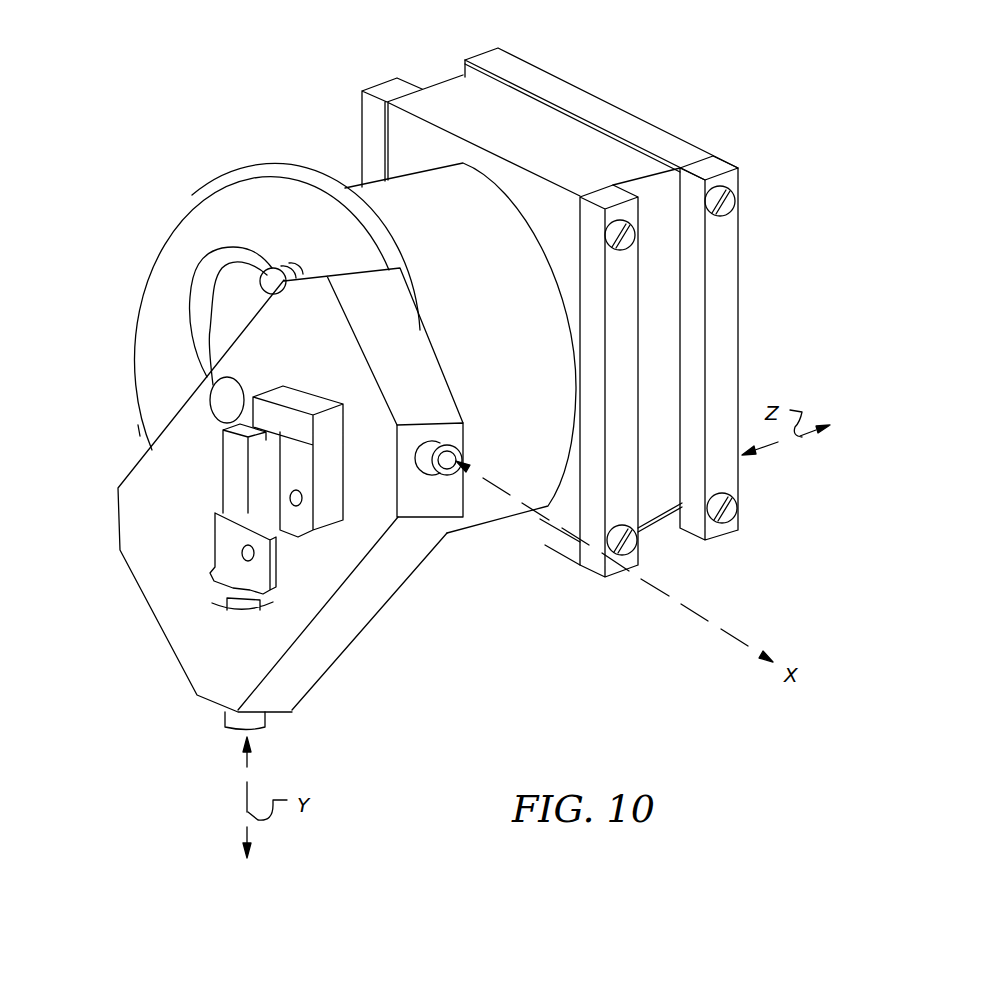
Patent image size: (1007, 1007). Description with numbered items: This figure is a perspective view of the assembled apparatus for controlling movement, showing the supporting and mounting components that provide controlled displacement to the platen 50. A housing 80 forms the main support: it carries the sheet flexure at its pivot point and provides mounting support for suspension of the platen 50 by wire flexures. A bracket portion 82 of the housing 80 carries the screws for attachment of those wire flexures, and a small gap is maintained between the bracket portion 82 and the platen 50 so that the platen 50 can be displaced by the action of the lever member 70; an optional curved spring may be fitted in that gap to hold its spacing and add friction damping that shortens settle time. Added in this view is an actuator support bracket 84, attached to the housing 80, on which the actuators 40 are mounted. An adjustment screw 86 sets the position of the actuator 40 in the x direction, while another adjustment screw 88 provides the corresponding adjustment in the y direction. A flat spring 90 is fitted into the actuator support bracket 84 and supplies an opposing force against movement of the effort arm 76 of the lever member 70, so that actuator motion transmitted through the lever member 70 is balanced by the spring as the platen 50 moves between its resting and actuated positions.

The actuator 40 is at (237, 483).
The platen 50 is at (650, 120).
The lever member 70 is at (177, 335).
The effort arm 76 is at (210, 383).
The housing 80 is at (240, 168).
The bracket portion 82 is at (448, 85).
The actuator support bracket 84 is at (357, 620).
The adjustment screw 86 is at (447, 475).
The adjustment screw 88 is at (227, 718).
The flat spring 90 is at (148, 430).